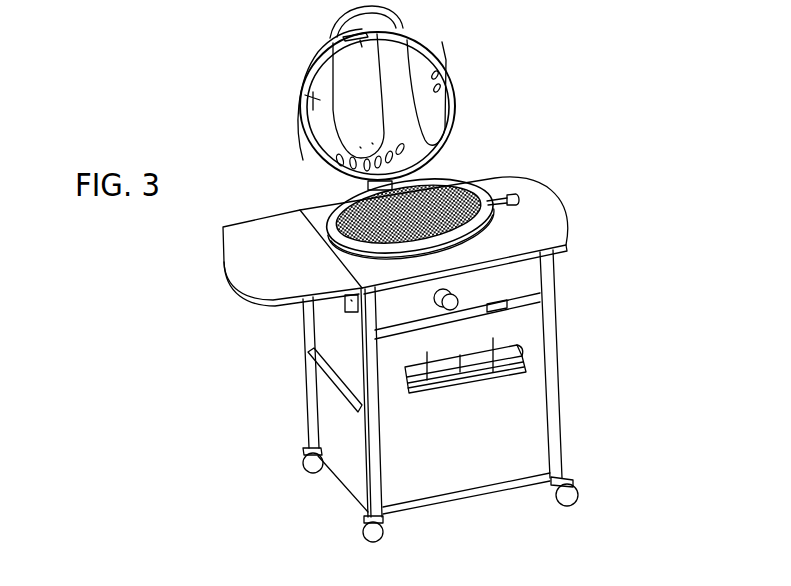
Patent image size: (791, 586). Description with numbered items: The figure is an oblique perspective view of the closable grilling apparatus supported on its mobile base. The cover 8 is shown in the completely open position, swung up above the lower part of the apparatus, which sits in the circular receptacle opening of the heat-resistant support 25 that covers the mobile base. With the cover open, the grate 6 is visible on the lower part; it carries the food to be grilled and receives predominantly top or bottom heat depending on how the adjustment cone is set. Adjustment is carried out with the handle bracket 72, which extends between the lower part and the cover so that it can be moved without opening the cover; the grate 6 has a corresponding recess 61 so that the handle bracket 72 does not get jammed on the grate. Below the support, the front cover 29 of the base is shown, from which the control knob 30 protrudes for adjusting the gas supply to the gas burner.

The cover 8 is at (322, 100).
The grate 6 is at (350, 196).
The recess 61 is at (477, 202).
The handle bracket 72 is at (517, 197).
The heat-resistant support 25 is at (533, 218).
The control knob 30 is at (458, 302).
The front cover 29 is at (495, 413).